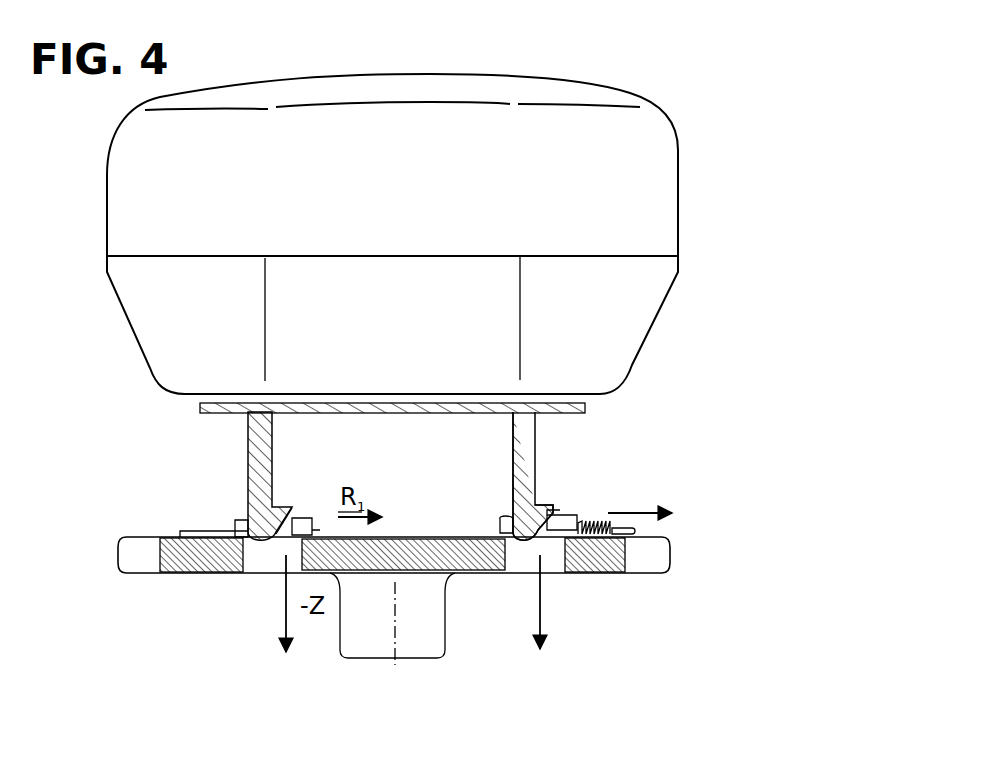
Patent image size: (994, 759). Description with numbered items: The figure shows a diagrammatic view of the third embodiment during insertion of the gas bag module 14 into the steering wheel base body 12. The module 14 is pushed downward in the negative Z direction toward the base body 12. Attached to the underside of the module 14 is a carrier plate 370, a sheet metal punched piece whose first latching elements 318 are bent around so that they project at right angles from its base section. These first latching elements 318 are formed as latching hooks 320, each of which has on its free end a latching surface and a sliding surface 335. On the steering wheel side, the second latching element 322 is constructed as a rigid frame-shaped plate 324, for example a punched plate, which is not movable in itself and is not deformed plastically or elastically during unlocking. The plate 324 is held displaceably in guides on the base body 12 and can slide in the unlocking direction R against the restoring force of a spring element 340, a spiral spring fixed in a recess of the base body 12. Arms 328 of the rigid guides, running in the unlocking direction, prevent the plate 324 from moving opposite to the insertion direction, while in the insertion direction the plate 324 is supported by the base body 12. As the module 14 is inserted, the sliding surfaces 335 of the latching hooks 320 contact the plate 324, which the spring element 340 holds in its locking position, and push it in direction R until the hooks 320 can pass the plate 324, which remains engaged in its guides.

The gas bag module 14 is at (406, 193).
The steering wheel base body 12 is at (618, 573).
The carrier plate 370 is at (585, 407).
The first latching element 318 is at (243, 440).
The latching hook 320 is at (250, 494).
The second latching element 322 is at (413, 538).
The plate 324 is at (302, 520).
The arm 328 is at (558, 517).
The sliding surface 335 is at (278, 540).
The spring element 340 is at (598, 524).